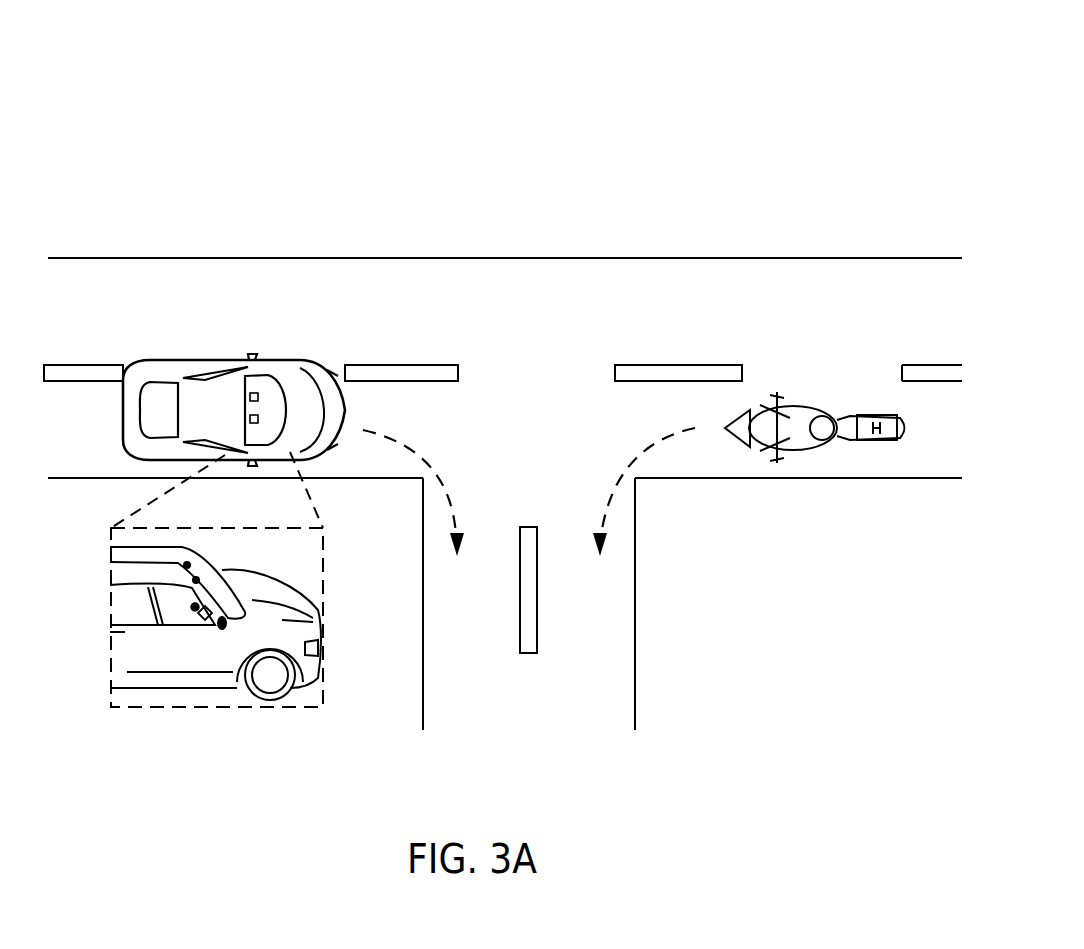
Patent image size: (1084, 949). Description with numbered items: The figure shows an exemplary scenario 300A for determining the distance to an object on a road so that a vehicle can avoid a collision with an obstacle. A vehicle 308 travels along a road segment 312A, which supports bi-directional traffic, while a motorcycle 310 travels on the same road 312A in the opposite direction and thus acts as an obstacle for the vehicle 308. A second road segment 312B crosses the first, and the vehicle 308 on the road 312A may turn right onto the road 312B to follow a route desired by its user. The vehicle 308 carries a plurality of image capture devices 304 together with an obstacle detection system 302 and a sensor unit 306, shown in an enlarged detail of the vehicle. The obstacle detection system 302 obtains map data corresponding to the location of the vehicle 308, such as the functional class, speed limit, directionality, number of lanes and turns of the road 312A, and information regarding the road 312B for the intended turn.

The driving scenario / environment 300A is at (503, 371).
The road segment 312A is at (75, 318).
The road segment 312B is at (585, 590).
The vehicle 308 is at (185, 360).
The plurality of image capture devices 304 is at (258, 422).
The sensor unit 306 is at (190, 615).
The obstacle detection system 302 is at (207, 622).
The motorcycle 310 is at (862, 432).